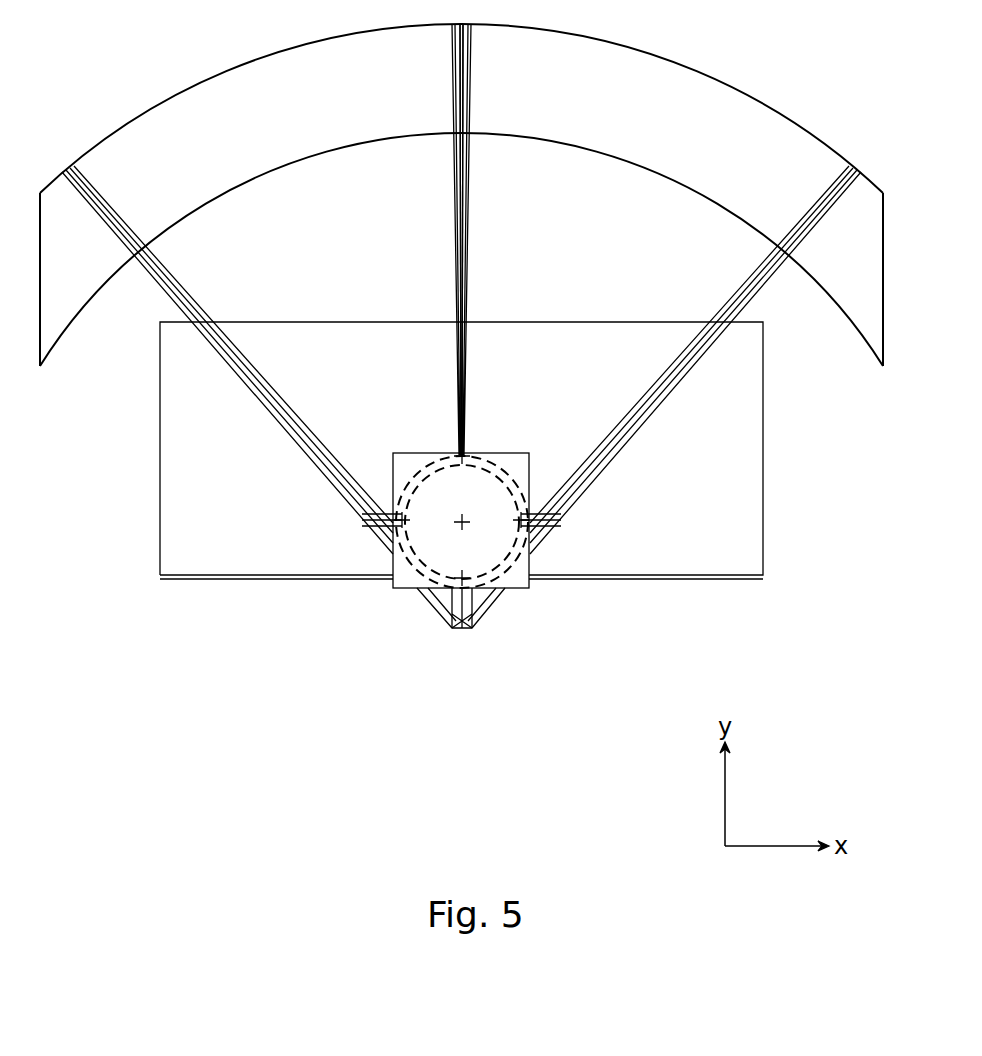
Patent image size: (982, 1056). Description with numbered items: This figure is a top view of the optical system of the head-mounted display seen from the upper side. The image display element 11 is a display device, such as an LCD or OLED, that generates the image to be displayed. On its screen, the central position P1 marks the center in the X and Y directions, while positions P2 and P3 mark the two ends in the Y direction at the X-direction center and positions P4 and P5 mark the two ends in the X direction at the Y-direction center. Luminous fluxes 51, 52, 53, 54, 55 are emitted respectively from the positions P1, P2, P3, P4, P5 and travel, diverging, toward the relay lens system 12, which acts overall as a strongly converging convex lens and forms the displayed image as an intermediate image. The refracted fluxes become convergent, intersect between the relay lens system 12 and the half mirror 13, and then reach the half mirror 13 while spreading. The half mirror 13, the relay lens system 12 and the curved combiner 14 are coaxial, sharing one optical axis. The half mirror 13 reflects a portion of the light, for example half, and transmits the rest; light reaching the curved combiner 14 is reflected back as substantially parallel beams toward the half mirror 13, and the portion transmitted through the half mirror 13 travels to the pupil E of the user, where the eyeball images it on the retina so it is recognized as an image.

The curved combiner 14 is at (676, 60).
The half mirror 13 is at (225, 580).
The relay lens system 12 is at (498, 450).
The image display element 11 is at (407, 590).
The pupil E is at (463, 630).
The luminous flux 51 is at (472, 218).
The luminous flux 52 is at (460, 239).
The luminous flux 53 is at (462, 239).
The luminous flux 54 is at (742, 290).
The luminous flux 55 is at (187, 297).
The central position P1 is at (468, 530).
The position P2 is at (468, 585).
The position P3 is at (452, 452).
The position P4 is at (393, 510).
The position P5 is at (530, 507).